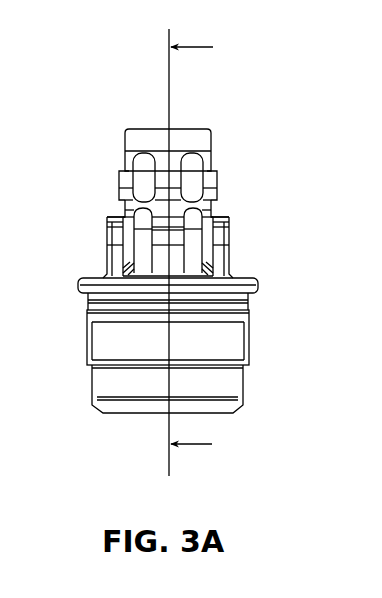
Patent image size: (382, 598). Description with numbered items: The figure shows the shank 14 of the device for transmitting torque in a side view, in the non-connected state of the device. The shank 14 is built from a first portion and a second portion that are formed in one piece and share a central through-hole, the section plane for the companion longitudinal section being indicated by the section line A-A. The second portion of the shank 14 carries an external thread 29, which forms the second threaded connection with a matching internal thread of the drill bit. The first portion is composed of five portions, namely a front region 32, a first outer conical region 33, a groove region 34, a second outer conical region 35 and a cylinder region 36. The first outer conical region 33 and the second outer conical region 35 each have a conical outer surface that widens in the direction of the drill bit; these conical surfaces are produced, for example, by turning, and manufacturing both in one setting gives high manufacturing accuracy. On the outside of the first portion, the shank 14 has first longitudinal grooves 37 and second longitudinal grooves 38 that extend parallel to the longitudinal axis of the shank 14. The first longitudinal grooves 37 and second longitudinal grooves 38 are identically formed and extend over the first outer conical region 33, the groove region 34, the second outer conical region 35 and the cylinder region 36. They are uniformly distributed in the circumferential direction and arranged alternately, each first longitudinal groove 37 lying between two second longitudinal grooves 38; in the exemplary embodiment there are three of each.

The shank 14 is at (121, 67).
The external thread 29 is at (249, 337).
The front region 32 is at (120, 135).
The first outer conical region 33 is at (236, 167).
The groove region 34 is at (120, 198).
The second outer conical region 35 is at (249, 227).
The cylinder region 36 is at (102, 248).
The first longitudinal grooves 37 is at (145, 172).
The second longitudinal grooves 38 is at (193, 172).